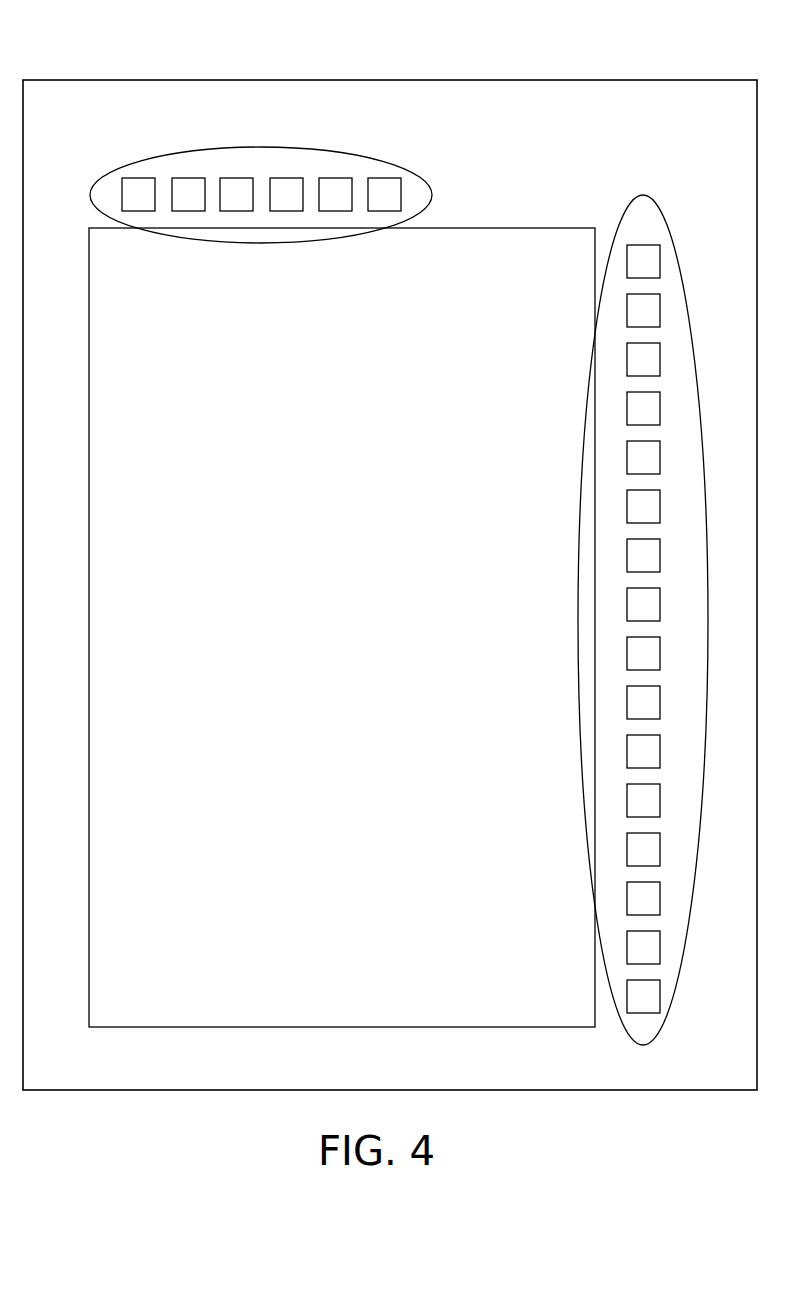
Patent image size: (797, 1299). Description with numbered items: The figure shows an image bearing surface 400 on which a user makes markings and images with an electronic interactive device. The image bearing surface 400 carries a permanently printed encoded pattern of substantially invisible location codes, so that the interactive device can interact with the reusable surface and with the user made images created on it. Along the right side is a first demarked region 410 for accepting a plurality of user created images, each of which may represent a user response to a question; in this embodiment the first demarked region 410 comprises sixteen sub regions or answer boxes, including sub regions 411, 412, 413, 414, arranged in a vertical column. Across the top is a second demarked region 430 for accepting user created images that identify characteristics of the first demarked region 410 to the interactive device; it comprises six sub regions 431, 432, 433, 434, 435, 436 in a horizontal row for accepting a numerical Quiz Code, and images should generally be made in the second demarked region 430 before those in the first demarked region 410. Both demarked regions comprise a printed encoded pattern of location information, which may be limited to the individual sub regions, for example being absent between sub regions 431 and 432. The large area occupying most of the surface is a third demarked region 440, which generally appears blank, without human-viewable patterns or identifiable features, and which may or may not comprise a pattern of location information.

The image bearing surface 400 is at (88, 36).
The first demarked region 410 is at (693, 336).
The sub region 411 is at (631, 270).
The sub region 412 is at (631, 318).
The sub region 413 is at (631, 368).
The sub region 414 is at (631, 416).
The second demarked region 430 is at (284, 148).
The sub region 431 is at (126, 202).
The sub region 432 is at (176, 202).
The sub region 433 is at (224, 202).
The sub region 434 is at (274, 202).
The sub region 435 is at (323, 202).
The sub region 436 is at (372, 202).
The third demarked region 440 is at (153, 268).